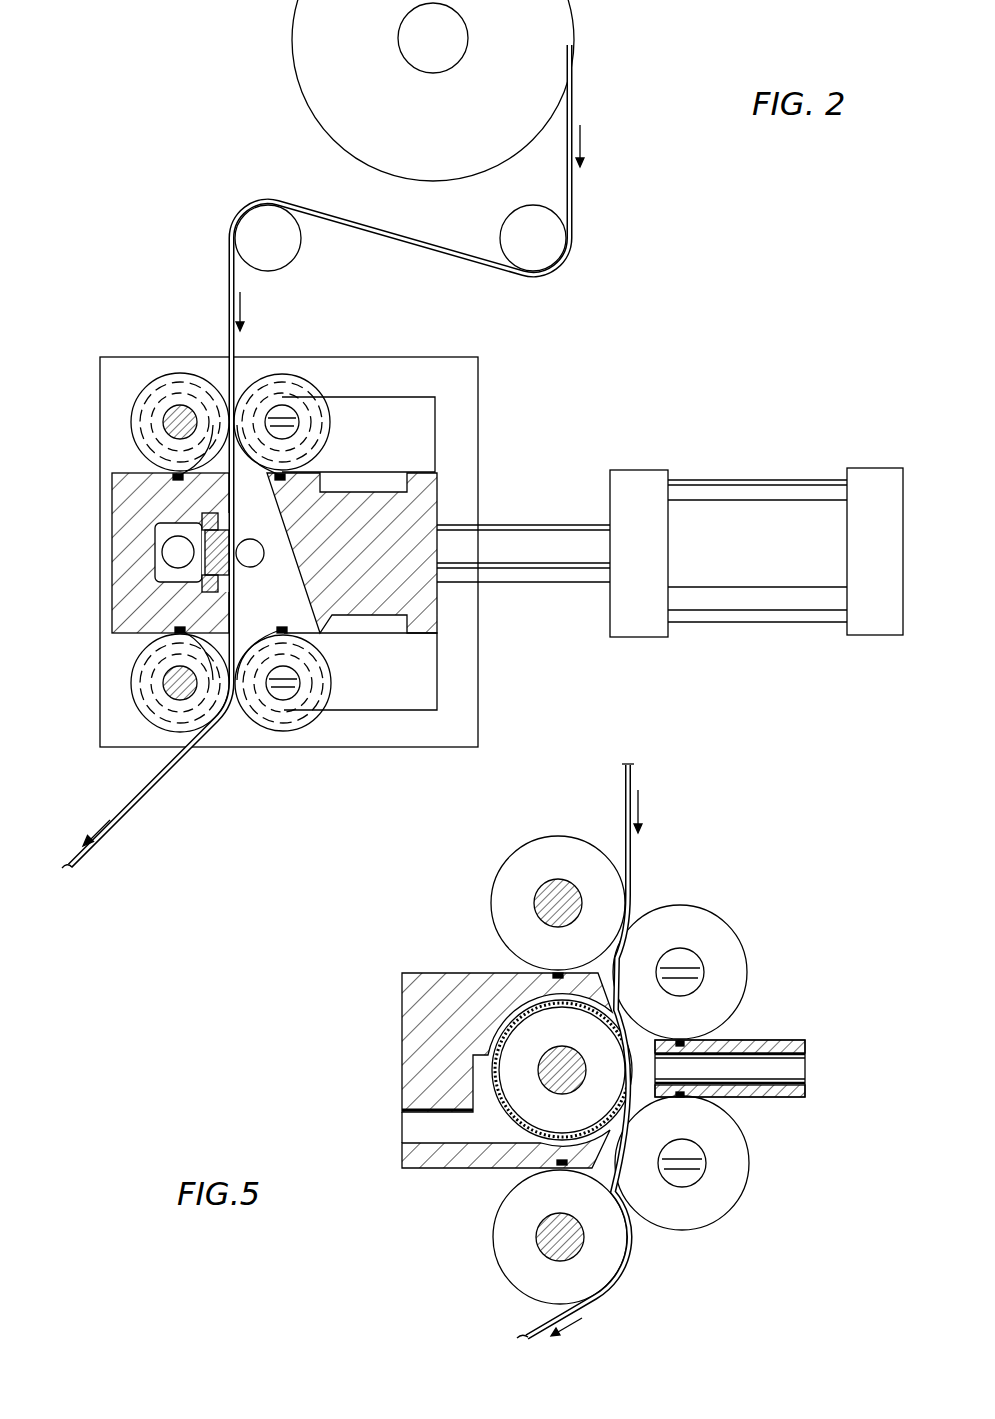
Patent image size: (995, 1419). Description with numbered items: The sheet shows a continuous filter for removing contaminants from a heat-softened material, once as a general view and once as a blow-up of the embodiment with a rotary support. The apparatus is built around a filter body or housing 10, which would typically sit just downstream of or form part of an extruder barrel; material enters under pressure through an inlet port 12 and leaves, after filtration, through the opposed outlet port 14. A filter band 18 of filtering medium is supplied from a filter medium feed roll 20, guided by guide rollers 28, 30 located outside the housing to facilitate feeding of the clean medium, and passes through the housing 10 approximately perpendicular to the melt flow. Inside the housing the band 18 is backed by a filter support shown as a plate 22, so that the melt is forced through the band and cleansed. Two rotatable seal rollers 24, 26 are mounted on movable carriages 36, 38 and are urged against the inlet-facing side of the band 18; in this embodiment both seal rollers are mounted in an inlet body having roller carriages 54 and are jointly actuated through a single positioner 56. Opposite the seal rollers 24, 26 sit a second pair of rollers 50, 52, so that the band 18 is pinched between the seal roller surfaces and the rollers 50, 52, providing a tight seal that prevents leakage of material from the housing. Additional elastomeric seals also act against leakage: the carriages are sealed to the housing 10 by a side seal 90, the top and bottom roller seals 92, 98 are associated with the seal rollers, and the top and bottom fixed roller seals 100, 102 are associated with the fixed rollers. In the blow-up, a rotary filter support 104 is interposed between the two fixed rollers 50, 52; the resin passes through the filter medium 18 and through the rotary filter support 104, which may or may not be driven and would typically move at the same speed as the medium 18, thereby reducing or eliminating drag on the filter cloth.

In FIG. 2, the filter housing 10 is at (430, 740).
In FIG. 2, the inlet port 12 is at (260, 548).
In FIG. 5, the inlet port 12 is at (797, 1070).
In FIG. 2, the outlet port 14 is at (172, 553).
In FIG. 2, the filter band 18 is at (108, 838).
In FIG. 5, the filter band 18 is at (630, 776).
In FIG. 2, the filter medium feed roll 20 is at (292, 42).
In FIG. 2, the filter support plate 22 is at (203, 565).
In FIG. 2, the seal roller 24 is at (282, 410).
In FIG. 5, the seal roller 24 is at (735, 940).
In FIG. 2, the seal roller 26 is at (283, 700).
In FIG. 5, the seal roller 26 is at (741, 1183).
In FIG. 2, the guide roller 28 is at (299, 241).
In FIG. 2, the guide roller 30 is at (561, 240).
In FIG. 2, the carriage 36 is at (430, 425).
In FIG. 2, the carriage 38 is at (433, 672).
In FIG. 2, the roller 50 is at (174, 405).
In FIG. 5, the roller 50 is at (492, 893).
In FIG. 2, the roller 52 is at (165, 695).
In FIG. 5, the roller 52 is at (495, 1235).
In FIG. 2, the roller carriage 54 is at (430, 605).
In FIG. 2, the positioner 56 is at (758, 477).
In FIG. 2, the side seal 90 is at (162, 517).
In FIG. 2, the top roller seal 92 is at (290, 472).
In FIG. 2, the bottom roller seal 98 is at (288, 631).
In FIG. 2, the top fixed roller seal 100 is at (163, 478).
In FIG. 2, the bottom fixed roller seal 102 is at (165, 632).
In FIG. 5, the rotary filter support 104 is at (490, 1055).